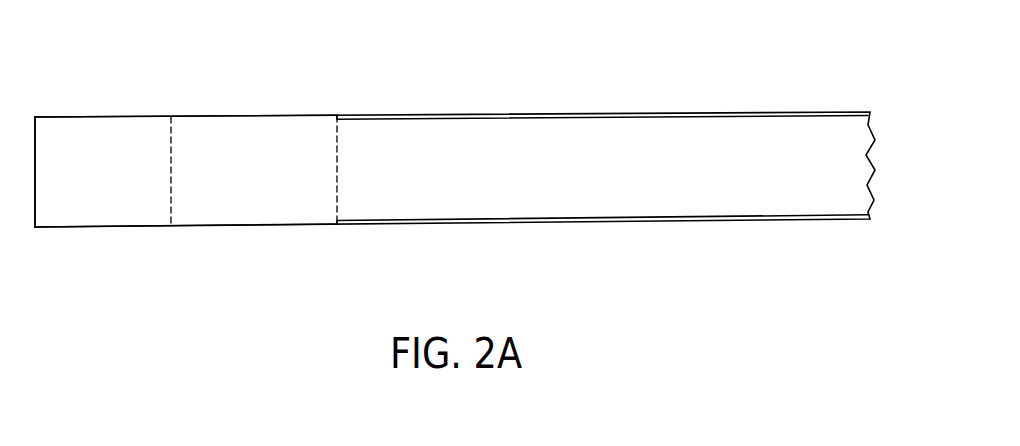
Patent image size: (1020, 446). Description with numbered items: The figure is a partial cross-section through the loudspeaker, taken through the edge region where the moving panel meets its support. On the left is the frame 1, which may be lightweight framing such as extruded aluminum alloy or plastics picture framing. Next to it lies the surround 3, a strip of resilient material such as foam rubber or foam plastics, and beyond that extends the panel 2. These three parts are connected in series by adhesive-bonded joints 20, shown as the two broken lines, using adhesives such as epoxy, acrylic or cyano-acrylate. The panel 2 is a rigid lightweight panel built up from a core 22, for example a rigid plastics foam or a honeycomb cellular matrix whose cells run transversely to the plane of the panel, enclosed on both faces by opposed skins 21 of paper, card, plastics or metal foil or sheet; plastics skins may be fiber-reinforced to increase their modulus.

The frame 1 is at (95, 117).
The panel 2 is at (726, 84).
The surround 3 is at (255, 116).
The adhesive-bonded joints 20 is at (171, 116).
The skins 21 is at (600, 113).
The core 22 is at (503, 130).